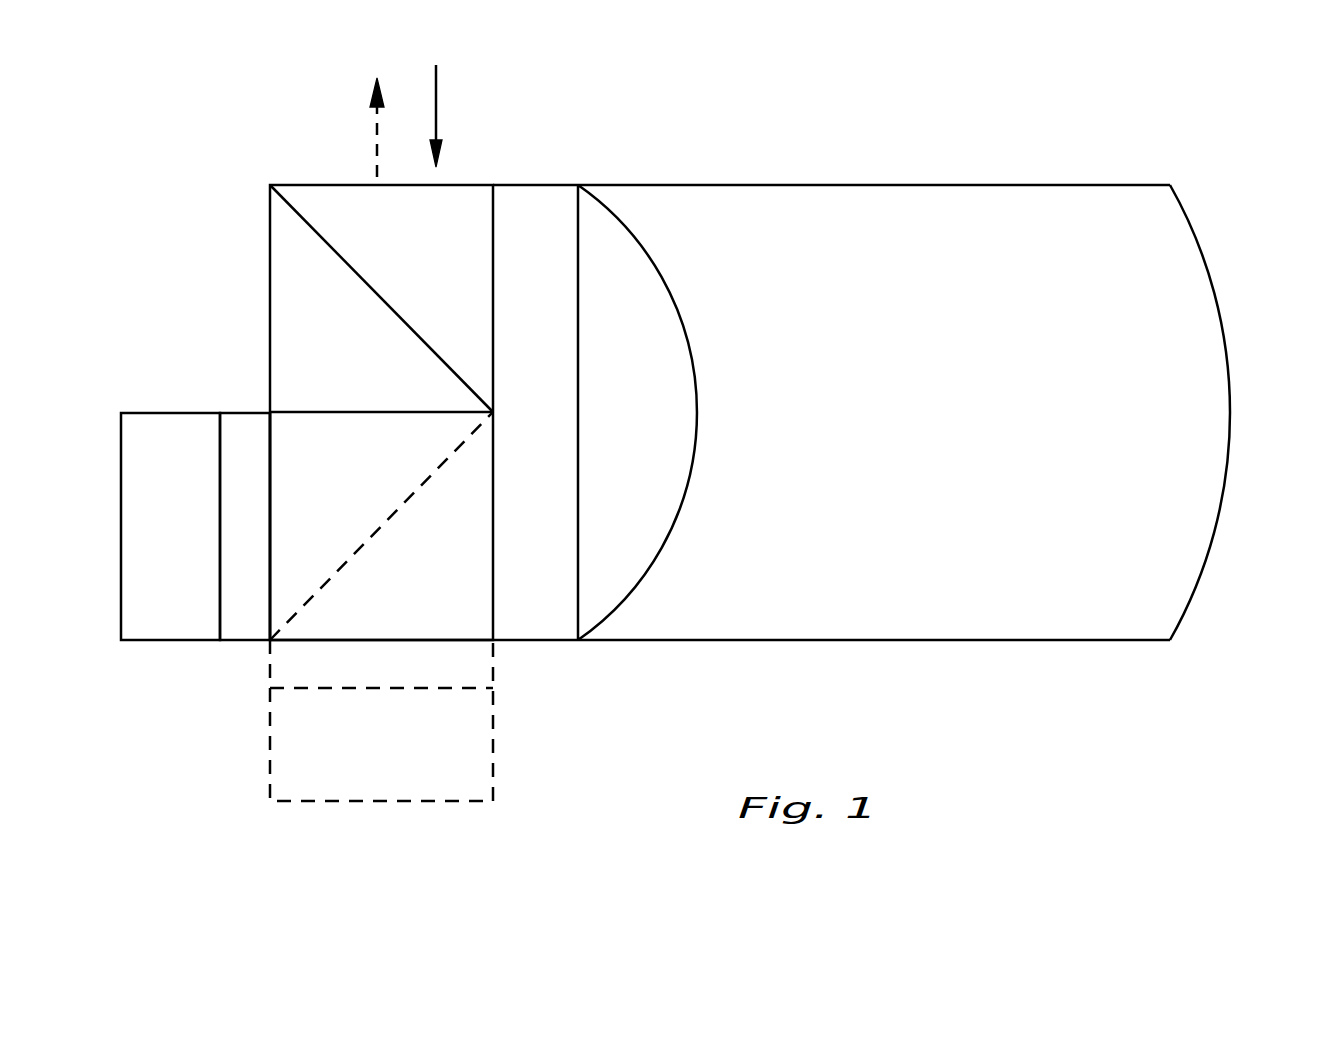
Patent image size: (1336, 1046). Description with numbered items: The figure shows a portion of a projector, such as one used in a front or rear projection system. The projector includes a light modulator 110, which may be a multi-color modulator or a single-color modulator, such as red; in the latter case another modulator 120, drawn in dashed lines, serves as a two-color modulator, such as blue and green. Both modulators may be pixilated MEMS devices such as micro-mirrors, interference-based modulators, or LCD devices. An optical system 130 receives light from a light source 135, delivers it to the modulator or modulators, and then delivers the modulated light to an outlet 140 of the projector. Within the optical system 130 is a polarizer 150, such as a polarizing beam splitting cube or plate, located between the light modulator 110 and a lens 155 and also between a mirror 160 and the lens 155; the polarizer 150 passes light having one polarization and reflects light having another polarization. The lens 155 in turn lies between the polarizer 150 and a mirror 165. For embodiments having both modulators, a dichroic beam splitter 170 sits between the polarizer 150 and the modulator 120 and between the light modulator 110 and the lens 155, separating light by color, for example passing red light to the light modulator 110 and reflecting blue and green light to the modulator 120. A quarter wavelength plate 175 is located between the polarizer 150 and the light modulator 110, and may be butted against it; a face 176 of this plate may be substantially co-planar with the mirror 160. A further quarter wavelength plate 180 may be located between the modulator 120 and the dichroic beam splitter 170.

The light modulator 110 is at (132, 652).
The modulator 120 is at (300, 803).
The optical system 130 is at (880, 183).
The light source 135 is at (435, 97).
The outlet 140 is at (379, 110).
The polarizer 150 is at (315, 228).
The lens 155 is at (637, 412).
The mirror 160 is at (275, 344).
The mirror 165 is at (1230, 367).
The dichroic beam splitter 170 is at (390, 520).
The quarter wavelength plate 175 is at (240, 652).
The face 176 is at (272, 472).
The quarter wavelength plate 180 is at (472, 669).